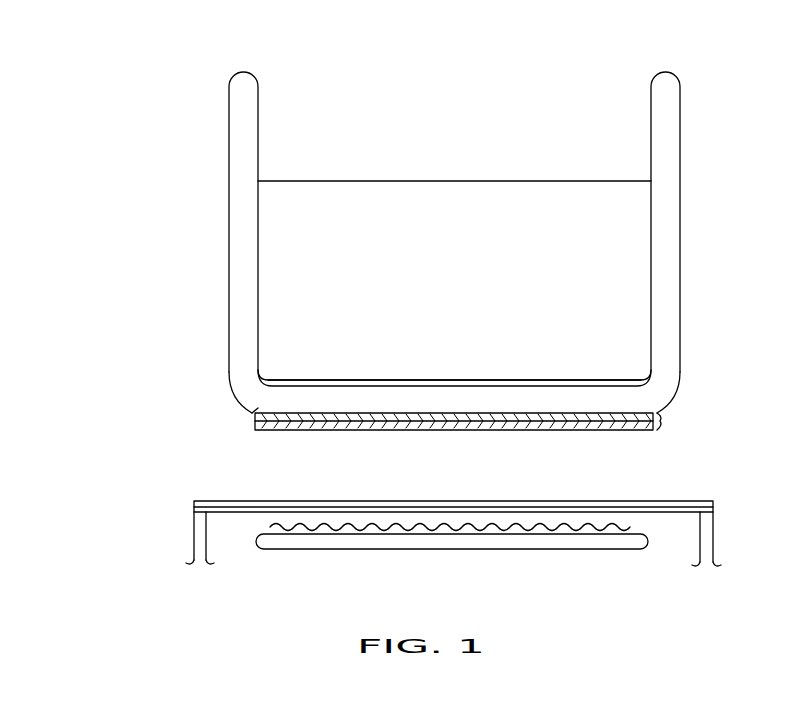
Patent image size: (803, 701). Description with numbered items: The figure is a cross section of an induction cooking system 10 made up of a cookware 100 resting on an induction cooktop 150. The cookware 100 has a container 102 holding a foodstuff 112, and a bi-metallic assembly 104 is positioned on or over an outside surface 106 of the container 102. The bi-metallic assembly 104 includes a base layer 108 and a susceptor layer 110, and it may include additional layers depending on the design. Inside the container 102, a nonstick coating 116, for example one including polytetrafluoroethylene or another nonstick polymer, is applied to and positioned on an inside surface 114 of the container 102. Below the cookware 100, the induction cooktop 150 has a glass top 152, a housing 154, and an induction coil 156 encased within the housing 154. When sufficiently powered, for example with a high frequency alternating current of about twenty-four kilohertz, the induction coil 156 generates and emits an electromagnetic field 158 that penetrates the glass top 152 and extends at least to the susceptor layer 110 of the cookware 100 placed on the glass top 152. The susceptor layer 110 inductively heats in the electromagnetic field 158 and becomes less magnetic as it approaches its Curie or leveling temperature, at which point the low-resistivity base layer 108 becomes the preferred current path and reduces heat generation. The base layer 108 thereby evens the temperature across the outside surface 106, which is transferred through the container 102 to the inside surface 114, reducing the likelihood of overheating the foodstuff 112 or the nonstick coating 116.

The induction cooking system 10 is at (131, 70).
The cookware 100 is at (196, 279).
The container 102 is at (229, 105).
The bi-metallic assembly 104 is at (664, 422).
The outside surface 106 is at (274, 410).
The base layer 108 is at (257, 418).
The susceptor layer 110 is at (257, 425).
The foodstuff 112 is at (368, 181).
The inside surface 114 is at (622, 396).
The nonstick coating 116 is at (367, 380).
The induction cooktop 150 is at (140, 530).
The glass top 152 is at (252, 505).
The housing 154 is at (194, 532).
The induction coil 156 is at (272, 550).
The electromagnetic field 158 is at (603, 525).